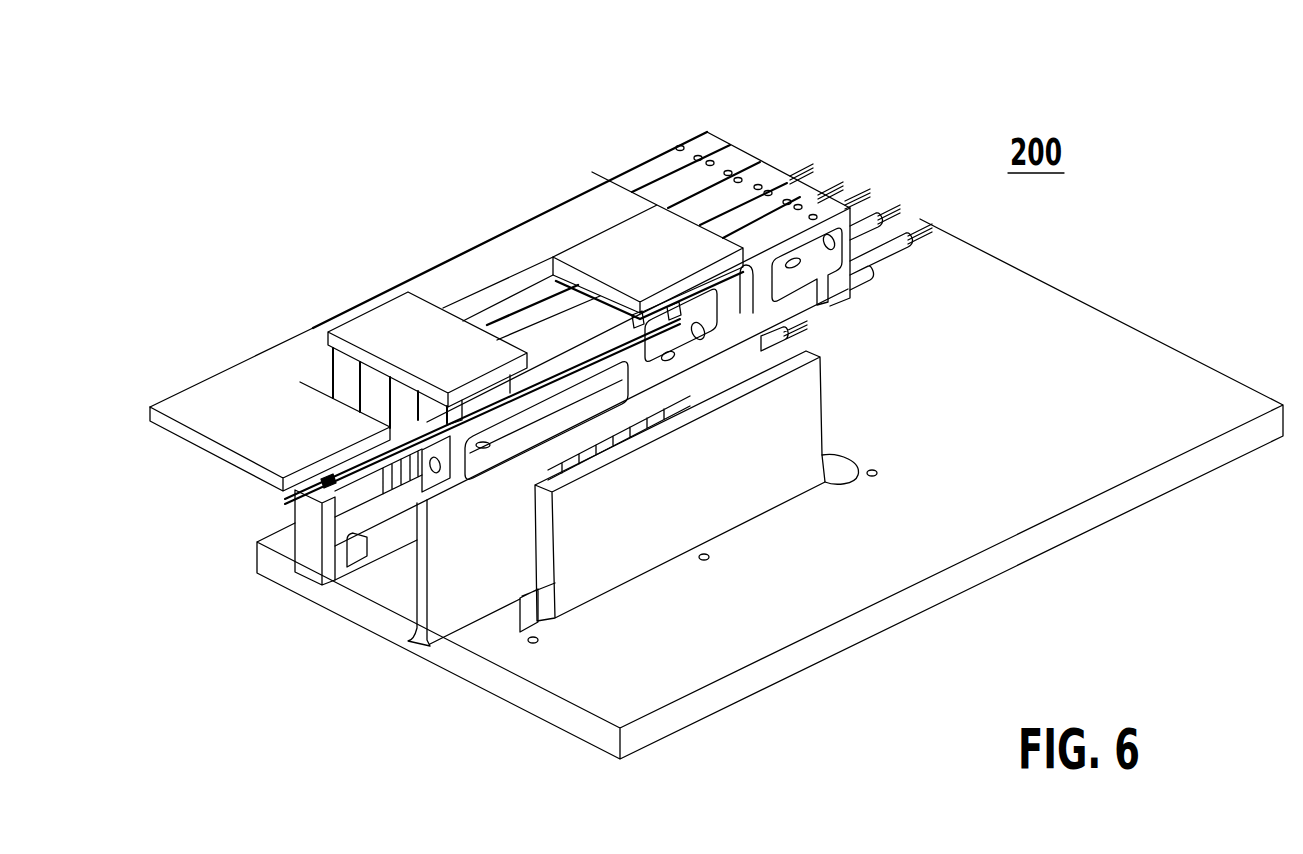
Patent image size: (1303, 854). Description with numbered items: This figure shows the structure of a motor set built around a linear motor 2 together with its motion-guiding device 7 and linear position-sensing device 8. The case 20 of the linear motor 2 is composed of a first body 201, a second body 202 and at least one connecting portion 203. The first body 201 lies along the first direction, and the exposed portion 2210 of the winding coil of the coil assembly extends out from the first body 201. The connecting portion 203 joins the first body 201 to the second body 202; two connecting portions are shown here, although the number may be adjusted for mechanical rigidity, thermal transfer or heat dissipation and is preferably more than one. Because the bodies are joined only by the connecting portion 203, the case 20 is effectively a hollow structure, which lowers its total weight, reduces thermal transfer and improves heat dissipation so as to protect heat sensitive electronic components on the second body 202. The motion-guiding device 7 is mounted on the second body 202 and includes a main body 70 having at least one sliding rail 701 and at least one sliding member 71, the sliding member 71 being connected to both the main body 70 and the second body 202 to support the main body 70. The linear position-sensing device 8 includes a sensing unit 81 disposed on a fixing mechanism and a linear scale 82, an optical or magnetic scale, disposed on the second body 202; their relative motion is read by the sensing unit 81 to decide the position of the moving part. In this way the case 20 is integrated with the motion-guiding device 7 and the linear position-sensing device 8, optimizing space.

The linear motor 2 is at (870, 306).
The case 20 is at (555, 356).
The first body 201 is at (660, 398).
The second body 202 is at (668, 338).
The connecting portion 203 is at (635, 373).
The exposed portion 2210 is at (480, 560).
The motion-guiding device 7 is at (266, 476).
The main body 70 is at (328, 378).
The sliding rail 701 is at (347, 480).
The sliding member 71 is at (333, 495).
The linear position-sensing device 8 is at (514, 280).
The sensing unit 81 is at (490, 402).
The linear scale 82 is at (557, 370).